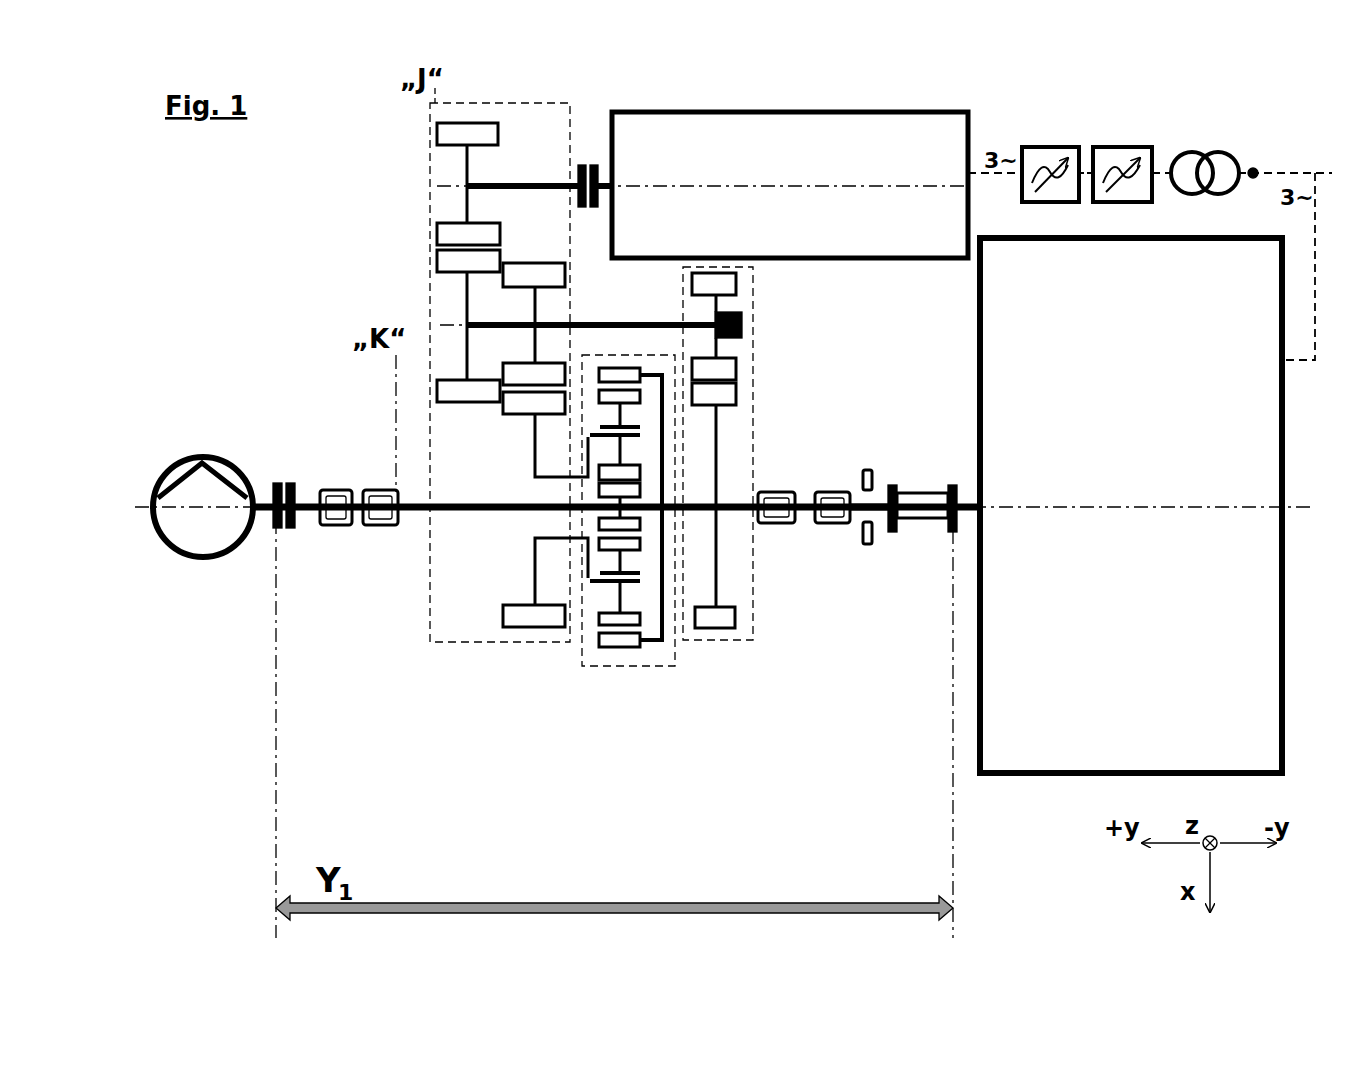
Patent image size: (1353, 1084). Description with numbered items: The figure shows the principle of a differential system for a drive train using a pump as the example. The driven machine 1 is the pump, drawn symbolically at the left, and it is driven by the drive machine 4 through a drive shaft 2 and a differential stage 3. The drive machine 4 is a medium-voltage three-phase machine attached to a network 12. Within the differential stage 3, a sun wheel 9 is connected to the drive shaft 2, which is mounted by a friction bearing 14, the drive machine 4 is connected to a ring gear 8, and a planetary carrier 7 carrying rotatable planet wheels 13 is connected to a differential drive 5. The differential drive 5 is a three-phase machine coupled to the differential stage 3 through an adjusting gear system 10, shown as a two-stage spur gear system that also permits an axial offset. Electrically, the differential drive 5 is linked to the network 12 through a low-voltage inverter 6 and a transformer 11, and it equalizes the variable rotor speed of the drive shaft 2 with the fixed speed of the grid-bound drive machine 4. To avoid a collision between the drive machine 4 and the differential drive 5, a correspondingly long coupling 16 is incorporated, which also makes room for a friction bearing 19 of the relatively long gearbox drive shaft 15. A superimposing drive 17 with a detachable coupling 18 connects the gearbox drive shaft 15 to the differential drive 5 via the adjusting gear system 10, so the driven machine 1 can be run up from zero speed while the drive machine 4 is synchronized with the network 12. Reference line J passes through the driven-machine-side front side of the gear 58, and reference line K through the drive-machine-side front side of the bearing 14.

The driven machine 1 is at (203, 559).
The drive shaft 2 is at (415, 514).
The differential stage 3 is at (615, 616).
The drive machine 4 is at (1056, 771).
The differential drive 5 is at (968, 113).
The low-voltage inverter 6 is at (1087, 144).
The planetary carrier 7 is at (589, 581).
The ring gear 8 is at (640, 642).
The sun wheel 9 is at (636, 524).
The adjusting gear system 10 is at (516, 349).
The transformer 11 is at (1187, 152).
The network 12 is at (1254, 170).
The planet wheels 13 is at (598, 620).
The friction bearing 14 is at (359, 535).
The gearbox drive shaft 15 is at (881, 514).
The coupling 16 is at (922, 490).
The superimposing drive 17 is at (769, 453).
The detachable/adjustable coupling 18 is at (744, 323).
The friction bearing 19 is at (812, 535).
The gear 58 is at (495, 133).